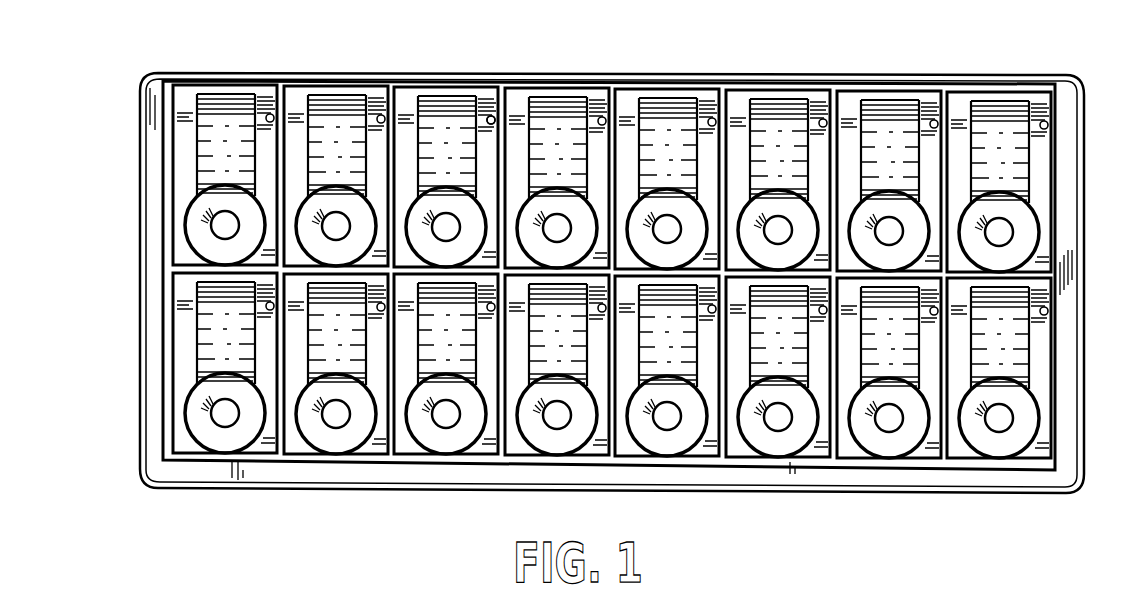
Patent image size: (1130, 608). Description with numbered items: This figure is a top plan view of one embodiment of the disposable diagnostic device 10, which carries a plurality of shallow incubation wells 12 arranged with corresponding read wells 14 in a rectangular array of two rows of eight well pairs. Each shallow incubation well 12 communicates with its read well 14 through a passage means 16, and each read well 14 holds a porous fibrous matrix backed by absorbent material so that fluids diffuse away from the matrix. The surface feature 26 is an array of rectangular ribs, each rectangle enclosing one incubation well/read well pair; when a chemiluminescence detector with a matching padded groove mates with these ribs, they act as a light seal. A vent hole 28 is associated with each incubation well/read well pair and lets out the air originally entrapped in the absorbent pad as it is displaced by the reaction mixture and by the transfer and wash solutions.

The device 10 is at (924, 74).
The shallow incubation well 12 is at (225, 322).
The read well 14 is at (213, 432).
The passage means 16 is at (224, 398).
The surface feature 26 is at (283, 137).
The vent hole 28 is at (489, 108).